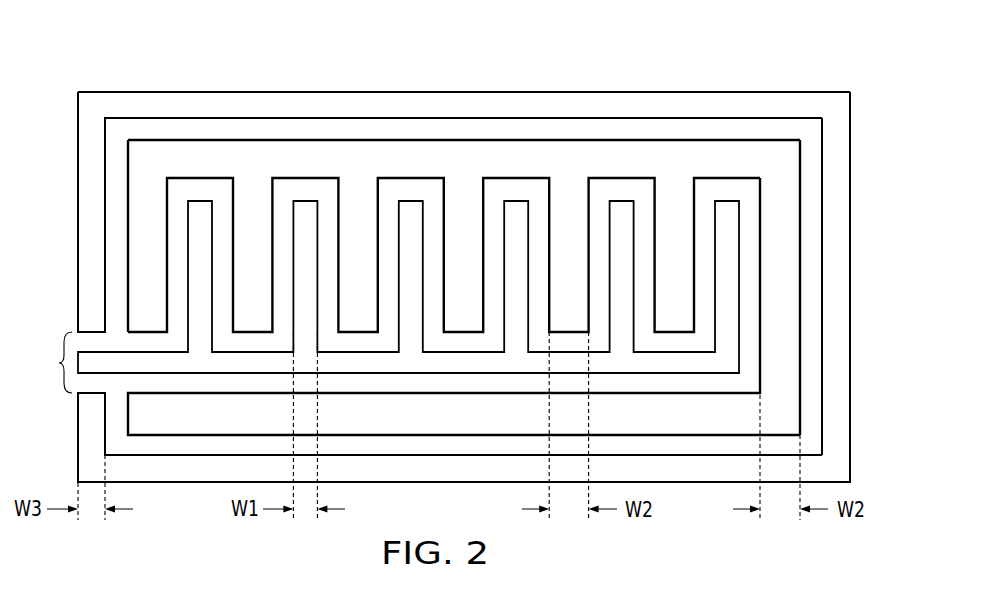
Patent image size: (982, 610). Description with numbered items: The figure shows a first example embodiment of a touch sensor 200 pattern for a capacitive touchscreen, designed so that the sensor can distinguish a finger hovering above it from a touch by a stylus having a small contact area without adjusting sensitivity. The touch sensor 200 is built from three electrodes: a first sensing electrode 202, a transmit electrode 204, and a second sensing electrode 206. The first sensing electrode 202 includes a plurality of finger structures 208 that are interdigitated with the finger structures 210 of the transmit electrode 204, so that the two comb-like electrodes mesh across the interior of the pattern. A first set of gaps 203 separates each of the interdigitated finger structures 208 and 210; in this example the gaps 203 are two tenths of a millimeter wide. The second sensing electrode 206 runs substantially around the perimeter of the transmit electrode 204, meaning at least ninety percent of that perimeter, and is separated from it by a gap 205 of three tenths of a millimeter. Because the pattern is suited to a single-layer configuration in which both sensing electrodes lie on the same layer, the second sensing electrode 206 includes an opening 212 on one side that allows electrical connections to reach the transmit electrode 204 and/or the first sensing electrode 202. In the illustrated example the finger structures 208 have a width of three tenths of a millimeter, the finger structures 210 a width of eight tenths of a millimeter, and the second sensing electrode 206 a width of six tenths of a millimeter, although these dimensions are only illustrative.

The touch sensor 200 is at (78, 81).
The first sensing electrode 202 is at (728, 288).
The gaps 203 is at (178, 196).
The transmit electrode 204 is at (785, 370).
The gap 205 is at (806, 131).
The second sensing electrode 206 is at (477, 100).
The finger structures 208 is at (180, 276).
The finger structures 210 is at (120, 200).
The opening 212 is at (41, 362).